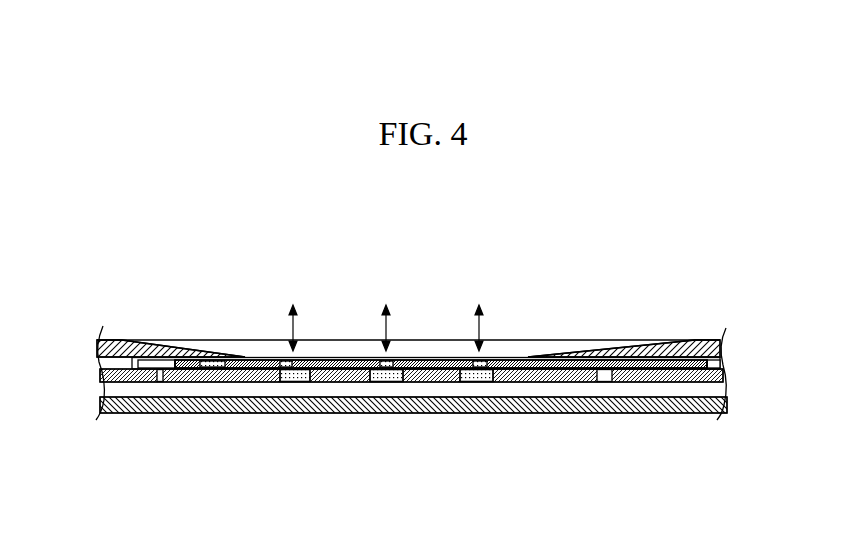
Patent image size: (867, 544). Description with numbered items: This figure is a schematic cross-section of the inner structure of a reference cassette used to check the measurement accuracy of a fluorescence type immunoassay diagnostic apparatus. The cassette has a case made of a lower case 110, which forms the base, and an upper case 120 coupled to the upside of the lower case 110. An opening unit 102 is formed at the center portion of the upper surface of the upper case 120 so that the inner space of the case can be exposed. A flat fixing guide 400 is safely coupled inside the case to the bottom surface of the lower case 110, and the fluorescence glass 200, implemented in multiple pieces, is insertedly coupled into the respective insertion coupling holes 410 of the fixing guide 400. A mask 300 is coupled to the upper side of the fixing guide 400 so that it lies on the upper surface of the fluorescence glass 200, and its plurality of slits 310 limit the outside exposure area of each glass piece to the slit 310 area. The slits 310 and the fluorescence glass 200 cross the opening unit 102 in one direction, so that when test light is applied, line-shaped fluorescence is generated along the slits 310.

The opening unit 102 is at (530, 348).
The lower case 110 is at (682, 347).
The upper case 120 is at (694, 412).
The fluorescence glass 200 is at (386, 367).
The mask 300 is at (255, 356).
The slits 310 is at (395, 355).
The fixing guide 400 is at (197, 374).
The insertion coupling holes 410 is at (408, 372).